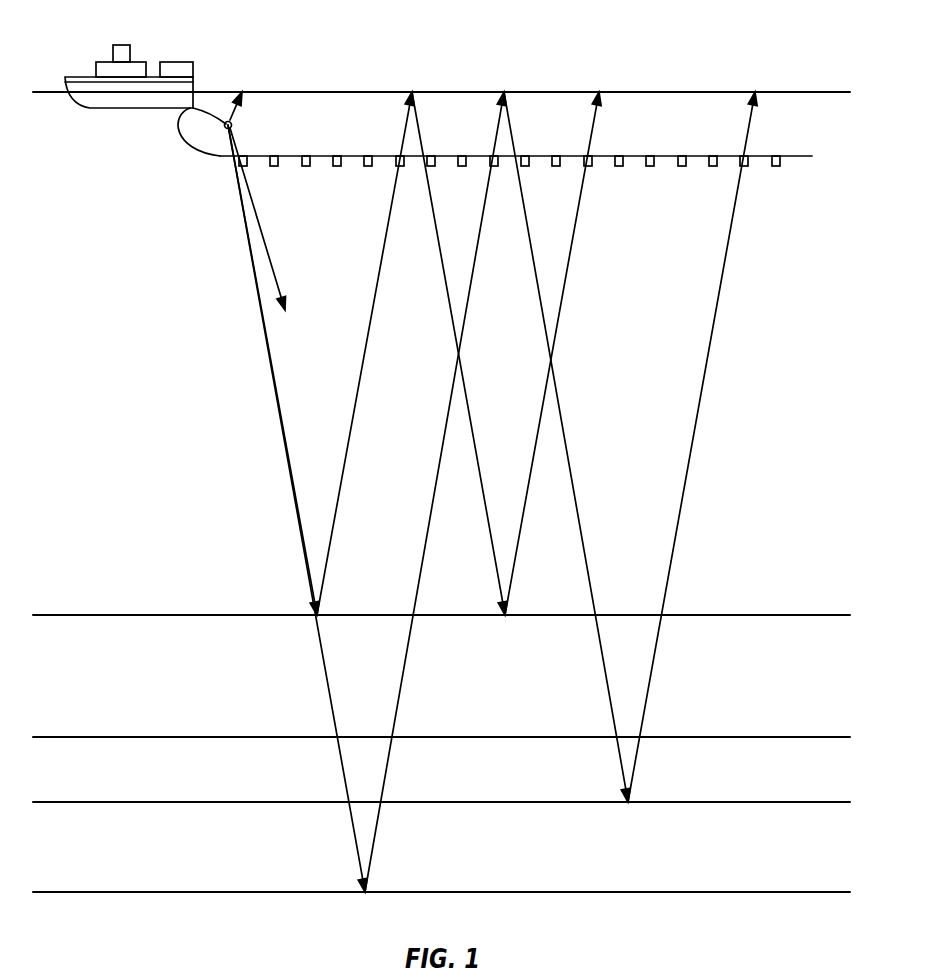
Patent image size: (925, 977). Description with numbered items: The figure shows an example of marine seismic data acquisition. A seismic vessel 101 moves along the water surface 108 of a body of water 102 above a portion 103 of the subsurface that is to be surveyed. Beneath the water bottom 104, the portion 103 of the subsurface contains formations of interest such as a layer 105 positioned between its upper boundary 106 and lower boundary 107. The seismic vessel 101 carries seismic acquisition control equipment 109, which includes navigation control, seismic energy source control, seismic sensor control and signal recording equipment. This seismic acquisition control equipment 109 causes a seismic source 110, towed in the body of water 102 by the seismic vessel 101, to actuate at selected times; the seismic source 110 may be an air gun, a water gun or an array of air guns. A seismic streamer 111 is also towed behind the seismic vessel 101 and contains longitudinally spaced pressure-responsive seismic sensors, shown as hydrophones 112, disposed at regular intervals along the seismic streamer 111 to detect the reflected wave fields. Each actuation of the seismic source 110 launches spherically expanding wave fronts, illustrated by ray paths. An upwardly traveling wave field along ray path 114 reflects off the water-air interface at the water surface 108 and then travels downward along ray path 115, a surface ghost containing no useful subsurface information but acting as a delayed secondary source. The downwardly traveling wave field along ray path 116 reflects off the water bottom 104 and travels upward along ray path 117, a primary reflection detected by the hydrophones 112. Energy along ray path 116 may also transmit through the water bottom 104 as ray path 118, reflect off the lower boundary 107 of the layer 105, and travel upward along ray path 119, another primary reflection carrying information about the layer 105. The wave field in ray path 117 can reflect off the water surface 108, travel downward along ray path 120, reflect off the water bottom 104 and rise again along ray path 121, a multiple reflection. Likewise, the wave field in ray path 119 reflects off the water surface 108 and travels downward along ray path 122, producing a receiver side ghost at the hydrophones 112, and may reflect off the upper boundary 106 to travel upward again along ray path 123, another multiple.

The seismic vessel 101 is at (121, 44).
The body of water 102 is at (150, 359).
The portion of the subsurface 103 is at (172, 694).
The water bottom 104 is at (132, 615).
The layer 105 is at (540, 860).
The upper boundary 106 is at (132, 802).
The lower boundary 107 is at (132, 892).
The water surface 108 is at (538, 92).
The seismic acquisition control equipment 109 is at (181, 62).
The seismic source 110 is at (226, 130).
The seismic streamer 111 is at (667, 156).
The hydrophones 112 is at (310, 156).
The ray path 114 is at (232, 112).
The ray path 115 is at (268, 222).
The ray path 116 is at (288, 462).
The ray path 117 is at (350, 462).
The ray path 118 is at (328, 697).
The ray path 119 is at (400, 695).
The ray path 120 is at (492, 570).
The ray path 121 is at (517, 570).
The ray path 122 is at (605, 695).
The ray path 123 is at (650, 695).